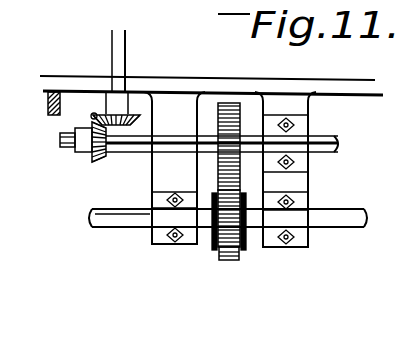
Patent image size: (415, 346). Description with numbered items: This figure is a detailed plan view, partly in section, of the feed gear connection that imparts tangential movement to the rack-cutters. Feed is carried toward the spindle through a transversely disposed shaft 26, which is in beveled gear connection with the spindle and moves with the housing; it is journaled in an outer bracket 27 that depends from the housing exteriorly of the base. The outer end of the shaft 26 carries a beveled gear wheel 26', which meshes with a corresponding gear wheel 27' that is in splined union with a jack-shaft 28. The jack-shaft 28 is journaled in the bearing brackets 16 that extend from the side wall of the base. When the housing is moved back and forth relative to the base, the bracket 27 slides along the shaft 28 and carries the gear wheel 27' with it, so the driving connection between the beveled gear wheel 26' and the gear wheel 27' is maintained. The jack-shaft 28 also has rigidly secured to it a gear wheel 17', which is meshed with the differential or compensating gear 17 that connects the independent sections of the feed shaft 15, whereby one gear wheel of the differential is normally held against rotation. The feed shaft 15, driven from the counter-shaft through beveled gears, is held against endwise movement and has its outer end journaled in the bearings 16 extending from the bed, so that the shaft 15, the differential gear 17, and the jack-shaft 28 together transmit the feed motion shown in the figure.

The feed shaft 15 is at (340, 228).
The bearing brackets 16 is at (162, 173).
The differential gear 17 is at (236, 238).
The gear wheel 17' is at (250, 121).
The transversely disposed shaft 26 is at (137, 72).
The beveled gear wheel 26' is at (149, 90).
The outer bracket 27 is at (47, 116).
The gear wheel 27' is at (79, 155).
The jack-shaft 28 is at (323, 140).